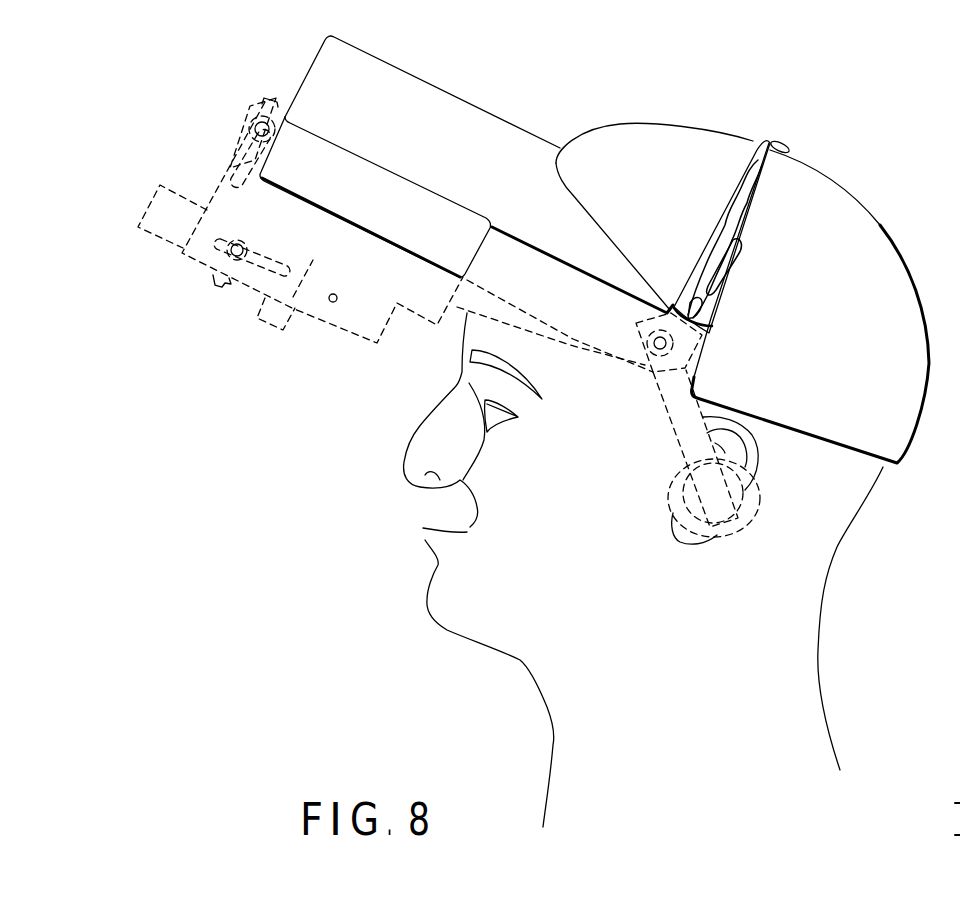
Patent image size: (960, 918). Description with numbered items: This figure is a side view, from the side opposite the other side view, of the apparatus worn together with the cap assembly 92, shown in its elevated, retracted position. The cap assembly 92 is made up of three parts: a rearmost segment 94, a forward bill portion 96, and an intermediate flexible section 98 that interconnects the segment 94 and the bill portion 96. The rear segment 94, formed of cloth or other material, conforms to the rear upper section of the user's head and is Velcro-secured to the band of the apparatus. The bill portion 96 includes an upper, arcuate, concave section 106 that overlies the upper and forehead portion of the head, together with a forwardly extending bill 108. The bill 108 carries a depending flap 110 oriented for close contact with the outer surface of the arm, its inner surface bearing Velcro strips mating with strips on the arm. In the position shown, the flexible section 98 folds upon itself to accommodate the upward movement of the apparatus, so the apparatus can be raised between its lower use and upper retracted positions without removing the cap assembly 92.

The cap assembly 92 is at (863, 128).
The rearmost segment 94 is at (867, 233).
The forward bill portion 96 is at (597, 147).
The intermediate flexible section 98 is at (755, 147).
The upper arcuate concave section 106 is at (662, 147).
The forwardly extending bill 108 is at (447, 111).
The depending flap 110 is at (407, 210).